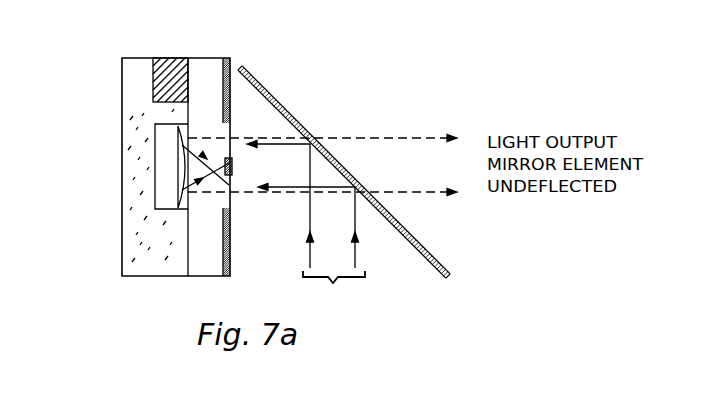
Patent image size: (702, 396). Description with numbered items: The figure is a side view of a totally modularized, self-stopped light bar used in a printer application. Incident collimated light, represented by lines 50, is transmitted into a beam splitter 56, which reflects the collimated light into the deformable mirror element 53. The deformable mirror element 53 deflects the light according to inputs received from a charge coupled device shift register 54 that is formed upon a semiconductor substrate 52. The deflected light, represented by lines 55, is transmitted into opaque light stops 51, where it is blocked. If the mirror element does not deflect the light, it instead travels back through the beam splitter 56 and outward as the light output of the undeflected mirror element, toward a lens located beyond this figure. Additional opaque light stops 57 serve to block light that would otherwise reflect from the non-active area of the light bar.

The incident collimated light 50 is at (322, 226).
The opaque light stops 51 is at (233, 163).
The semiconductor substrate 52 is at (142, 258).
The deformable mirror element 53 is at (178, 170).
The charge coupled device shift register 54 is at (170, 58).
The deflected light 55 is at (233, 179).
The beam splitter 56 is at (286, 105).
The opaque light stops 57 is at (235, 284).